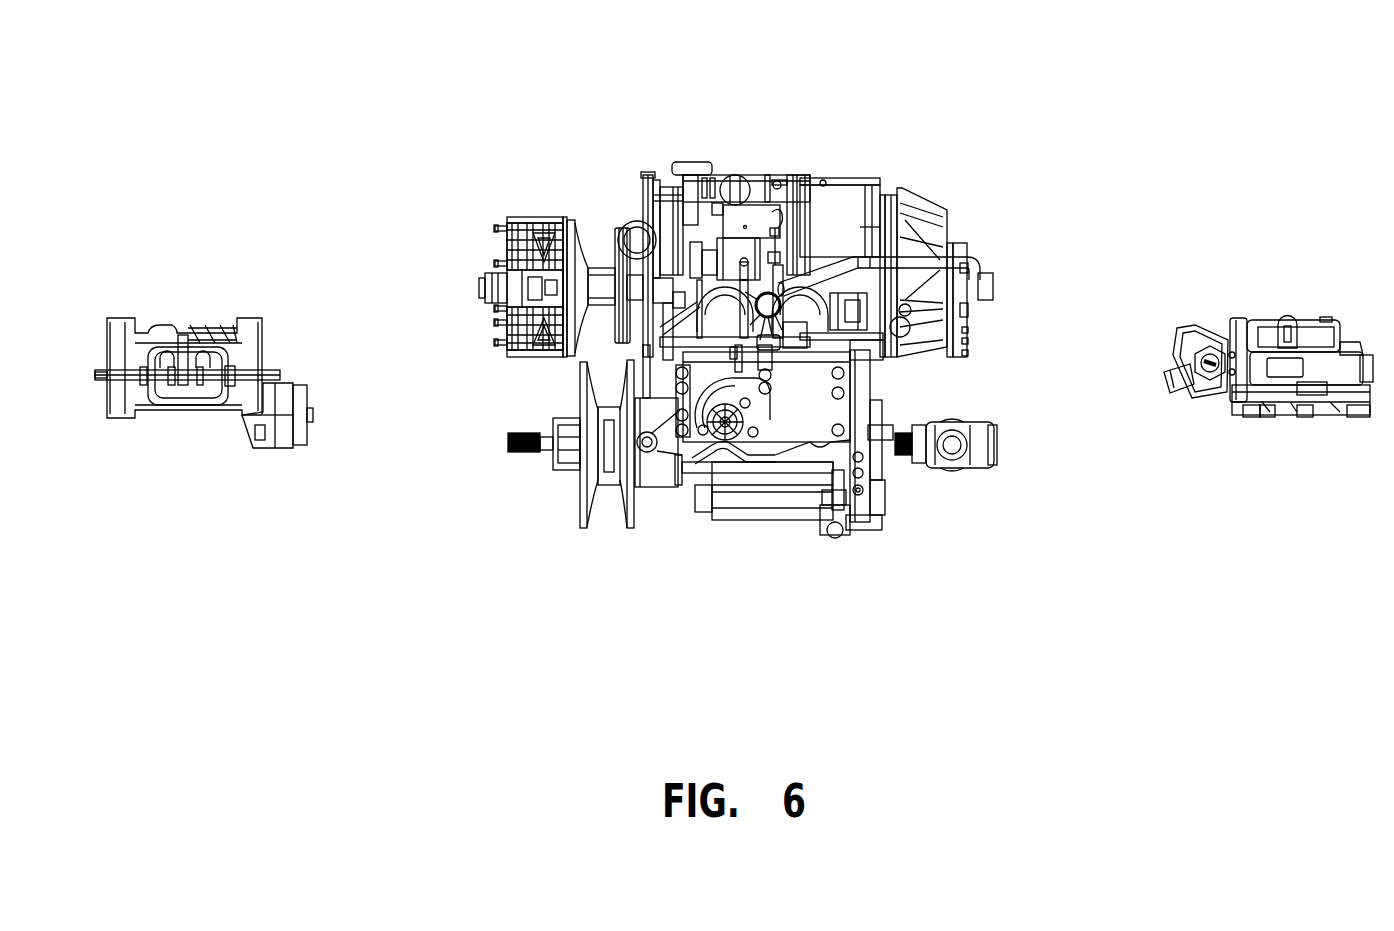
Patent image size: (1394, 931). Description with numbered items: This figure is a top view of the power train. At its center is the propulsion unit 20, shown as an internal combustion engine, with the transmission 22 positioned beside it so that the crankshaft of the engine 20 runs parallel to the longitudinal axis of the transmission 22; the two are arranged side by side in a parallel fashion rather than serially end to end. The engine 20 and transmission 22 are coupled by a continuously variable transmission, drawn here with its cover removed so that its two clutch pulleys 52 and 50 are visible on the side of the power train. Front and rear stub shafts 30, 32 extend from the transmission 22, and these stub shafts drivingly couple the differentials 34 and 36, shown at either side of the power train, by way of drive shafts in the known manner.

The propulsion unit 20 is at (815, 175).
The transmission 22 is at (782, 540).
The front stub shaft 30 is at (905, 463).
The rear stub shaft 32 is at (517, 460).
The differential 34 is at (183, 305).
The differential 36 is at (1298, 305).
The driven clutch 50 is at (585, 537).
The drive clutch 52 is at (540, 212).